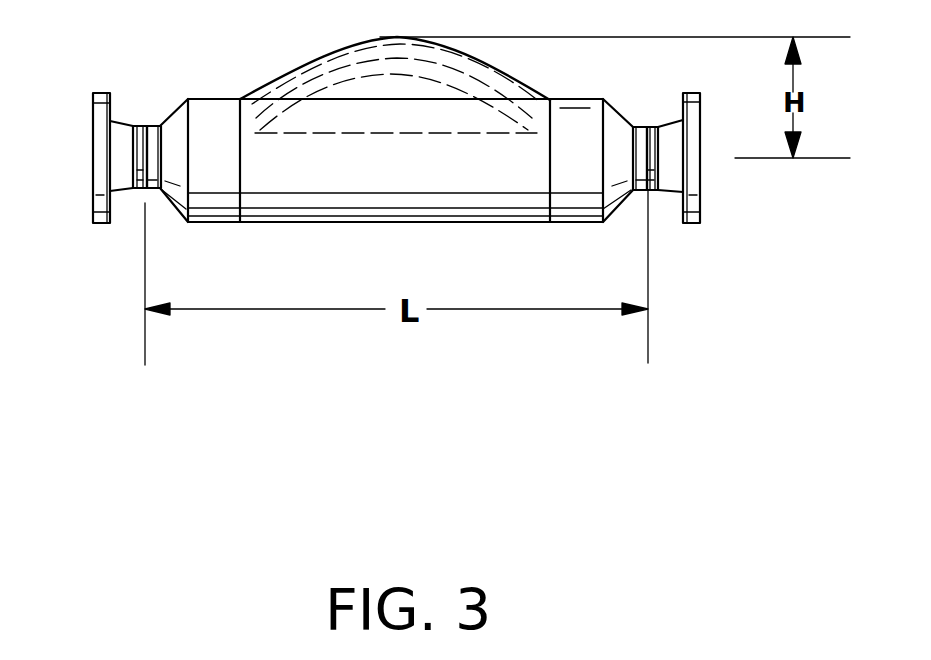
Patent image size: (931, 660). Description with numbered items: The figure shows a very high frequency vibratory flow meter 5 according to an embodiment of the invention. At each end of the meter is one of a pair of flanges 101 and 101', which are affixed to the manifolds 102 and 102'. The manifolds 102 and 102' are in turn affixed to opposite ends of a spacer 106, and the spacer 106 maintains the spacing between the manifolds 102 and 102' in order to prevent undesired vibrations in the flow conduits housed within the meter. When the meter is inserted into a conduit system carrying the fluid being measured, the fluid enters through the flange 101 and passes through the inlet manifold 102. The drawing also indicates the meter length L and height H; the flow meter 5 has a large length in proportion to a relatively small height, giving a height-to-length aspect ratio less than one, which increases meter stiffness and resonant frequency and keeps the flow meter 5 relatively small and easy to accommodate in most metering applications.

The very high frequency vibratory flow meter 5 is at (407, 236).
The flange 101 is at (65, 196).
The flange 101' is at (739, 192).
The inlet manifold 102 is at (123, 221).
The manifold 102' is at (673, 225).
The spacer 106 is at (205, 98).